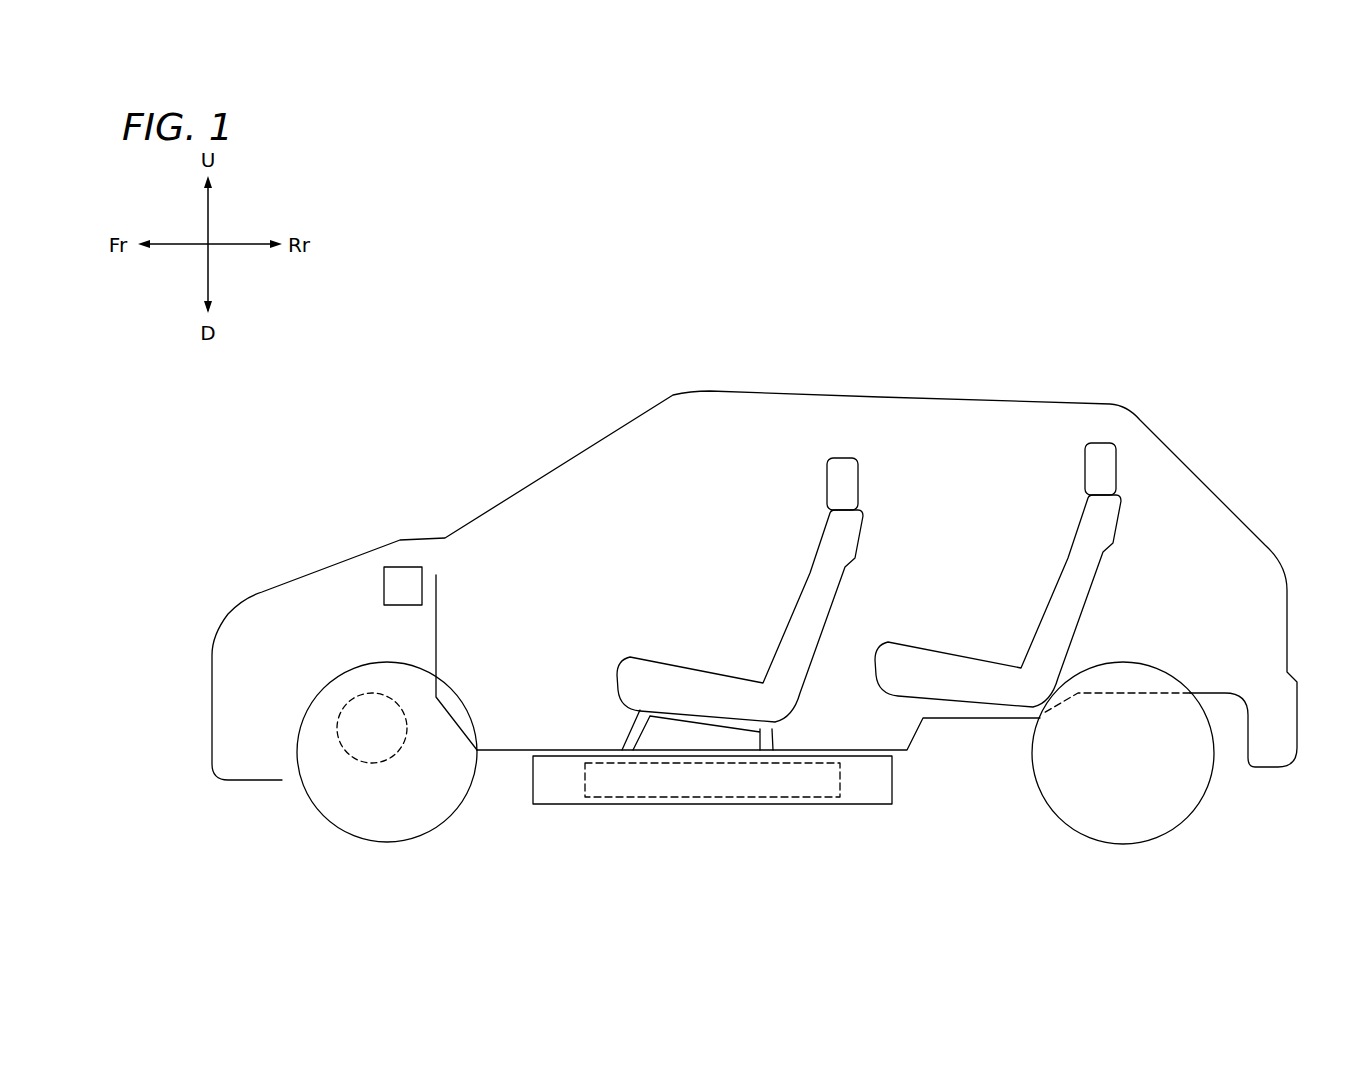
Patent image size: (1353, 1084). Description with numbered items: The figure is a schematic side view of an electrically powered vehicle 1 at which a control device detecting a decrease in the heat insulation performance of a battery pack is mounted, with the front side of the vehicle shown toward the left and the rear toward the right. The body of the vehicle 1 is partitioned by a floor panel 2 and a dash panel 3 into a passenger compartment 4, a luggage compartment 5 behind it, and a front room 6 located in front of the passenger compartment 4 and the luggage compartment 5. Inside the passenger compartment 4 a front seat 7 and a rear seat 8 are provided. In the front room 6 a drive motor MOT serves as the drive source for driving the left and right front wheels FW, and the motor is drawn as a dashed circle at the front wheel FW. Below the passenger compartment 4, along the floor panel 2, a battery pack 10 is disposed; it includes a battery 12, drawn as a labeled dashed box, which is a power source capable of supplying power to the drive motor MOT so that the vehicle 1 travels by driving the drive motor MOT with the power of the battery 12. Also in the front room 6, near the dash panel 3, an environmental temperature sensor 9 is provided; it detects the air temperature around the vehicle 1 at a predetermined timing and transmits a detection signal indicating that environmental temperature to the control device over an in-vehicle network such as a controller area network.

The vehicle 1 is at (796, 301).
The floor panel 2 is at (505, 750).
The dash panel 3 is at (436, 640).
The passenger compartment 4 is at (668, 577).
The luggage compartment 5 is at (1161, 577).
The front room 6 is at (253, 664).
The front seat 7 is at (718, 668).
The rear seat 8 is at (960, 653).
The environmental temperature sensor 9 is at (403, 585).
The battery pack 10 is at (561, 805).
The battery 12 is at (612, 804).
The drive motor MOT is at (368, 742).
The front wheels FW is at (422, 838).